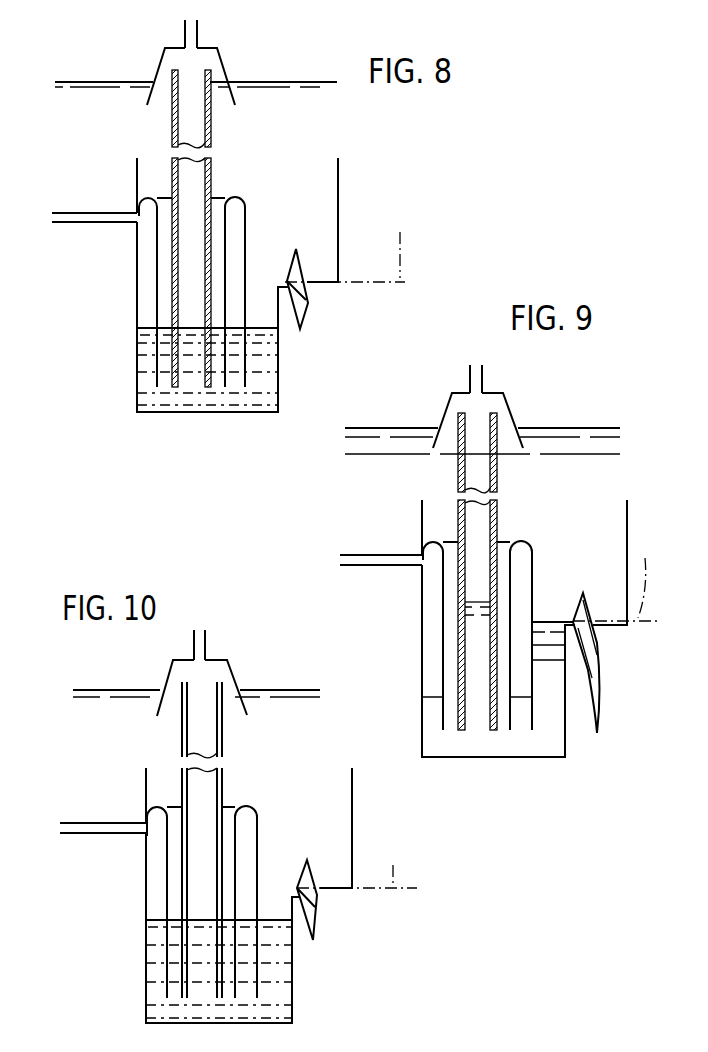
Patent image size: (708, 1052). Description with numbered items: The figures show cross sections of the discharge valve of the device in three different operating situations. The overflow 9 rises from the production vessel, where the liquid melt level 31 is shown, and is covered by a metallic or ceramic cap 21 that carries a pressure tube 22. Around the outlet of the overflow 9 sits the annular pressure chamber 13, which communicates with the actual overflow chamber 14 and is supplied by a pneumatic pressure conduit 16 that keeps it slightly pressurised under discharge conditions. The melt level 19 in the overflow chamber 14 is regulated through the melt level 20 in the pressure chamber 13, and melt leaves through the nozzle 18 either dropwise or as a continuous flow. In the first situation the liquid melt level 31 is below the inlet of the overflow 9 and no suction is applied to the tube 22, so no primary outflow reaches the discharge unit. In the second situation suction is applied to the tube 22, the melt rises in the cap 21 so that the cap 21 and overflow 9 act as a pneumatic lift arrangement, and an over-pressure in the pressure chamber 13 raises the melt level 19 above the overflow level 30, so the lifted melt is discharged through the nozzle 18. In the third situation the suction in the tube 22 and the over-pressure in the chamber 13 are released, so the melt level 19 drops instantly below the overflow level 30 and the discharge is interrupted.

In FIG. 8, the overflow 9 is at (211, 122).
In FIG. 9, the overflow 9 is at (477, 571).
In FIG. 10, the overflow 9 is at (202, 840).
In FIG. 8, the pressure chamber 13 is at (143, 269).
In FIG. 9, the pressure chamber 13 is at (427, 623).
In FIG. 10, the pressure chamber 13 is at (150, 875).
In FIG. 8, the overflow chamber 14 is at (268, 364).
In FIG. 9, the overflow chamber 14 is at (550, 705).
In FIG. 10, the overflow chamber 14 is at (219, 969).
In FIG. 8, the pneumatic pressure conduit 16 is at (102, 212).
In FIG. 9, the pneumatic pressure conduit 16 is at (380, 557).
In FIG. 10, the pneumatic pressure conduit 16 is at (108, 827).
In FIG. 8, the nozzle 18 is at (303, 298).
In FIG. 9, the nozzle 18 is at (587, 633).
In FIG. 10, the nozzle 18 is at (313, 910).
In FIG. 8, the melt level 19 is at (258, 328).
In FIG. 9, the melt level 19 is at (550, 620).
In FIG. 10, the melt level 19 is at (272, 917).
In FIG. 8, the melt level 20 is at (148, 328).
In FIG. 9, the melt level 20 is at (428, 697).
In FIG. 10, the melt level 20 is at (157, 919).
In FIG. 8, the cap 21 is at (222, 72).
In FIG. 9, the cap 21 is at (507, 406).
In FIG. 10, the cap 21 is at (170, 678).
In FIG. 8, the pressure tube 22 is at (197, 32).
In FIG. 9, the pressure tube 22 is at (482, 380).
In FIG. 10, the pressure tube 22 is at (205, 638).
In FIG. 8, the overflow level 30 is at (393, 243).
In FIG. 9, the overflow level 30 is at (647, 576).
In FIG. 10, the overflow level 30 is at (389, 865).
In FIG. 8, the liquid melt level 31 is at (196, 65).
In FIG. 9, the liquid melt level 31 is at (395, 428).
In FIG. 10, the liquid melt level 31 is at (262, 690).